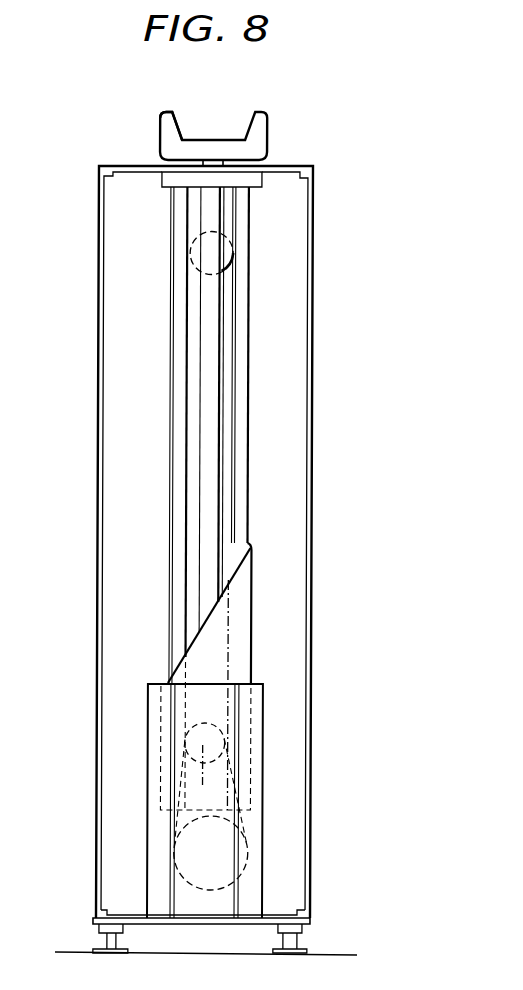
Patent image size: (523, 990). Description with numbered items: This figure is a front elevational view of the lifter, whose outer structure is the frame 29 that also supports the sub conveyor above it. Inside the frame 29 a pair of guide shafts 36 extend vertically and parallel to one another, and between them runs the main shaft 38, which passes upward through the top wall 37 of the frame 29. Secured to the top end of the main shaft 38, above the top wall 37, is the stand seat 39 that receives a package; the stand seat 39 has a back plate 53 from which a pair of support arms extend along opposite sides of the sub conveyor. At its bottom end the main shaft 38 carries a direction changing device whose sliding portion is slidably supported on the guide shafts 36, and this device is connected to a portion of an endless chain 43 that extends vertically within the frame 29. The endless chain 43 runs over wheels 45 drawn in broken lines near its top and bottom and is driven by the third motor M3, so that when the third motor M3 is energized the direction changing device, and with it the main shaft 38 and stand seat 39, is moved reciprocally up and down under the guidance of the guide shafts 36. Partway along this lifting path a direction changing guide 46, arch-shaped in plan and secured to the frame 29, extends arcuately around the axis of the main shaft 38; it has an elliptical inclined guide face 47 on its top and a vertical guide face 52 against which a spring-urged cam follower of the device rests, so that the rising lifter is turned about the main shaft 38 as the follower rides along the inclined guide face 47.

The frame 29 is at (313, 380).
The guide shafts 36 is at (178, 317).
The top wall 37 is at (280, 176).
The main shaft 38 is at (203, 402).
The stand seat 39 is at (271, 120).
The endless chain 43 is at (230, 449).
The pulley 45 is at (195, 252).
The direction changing guide 46 is at (256, 612).
The inclined guide face 47 is at (213, 608).
The vertical guide face 52 is at (165, 748).
The back plate 53 is at (162, 133).
The third motor M3 is at (197, 852).